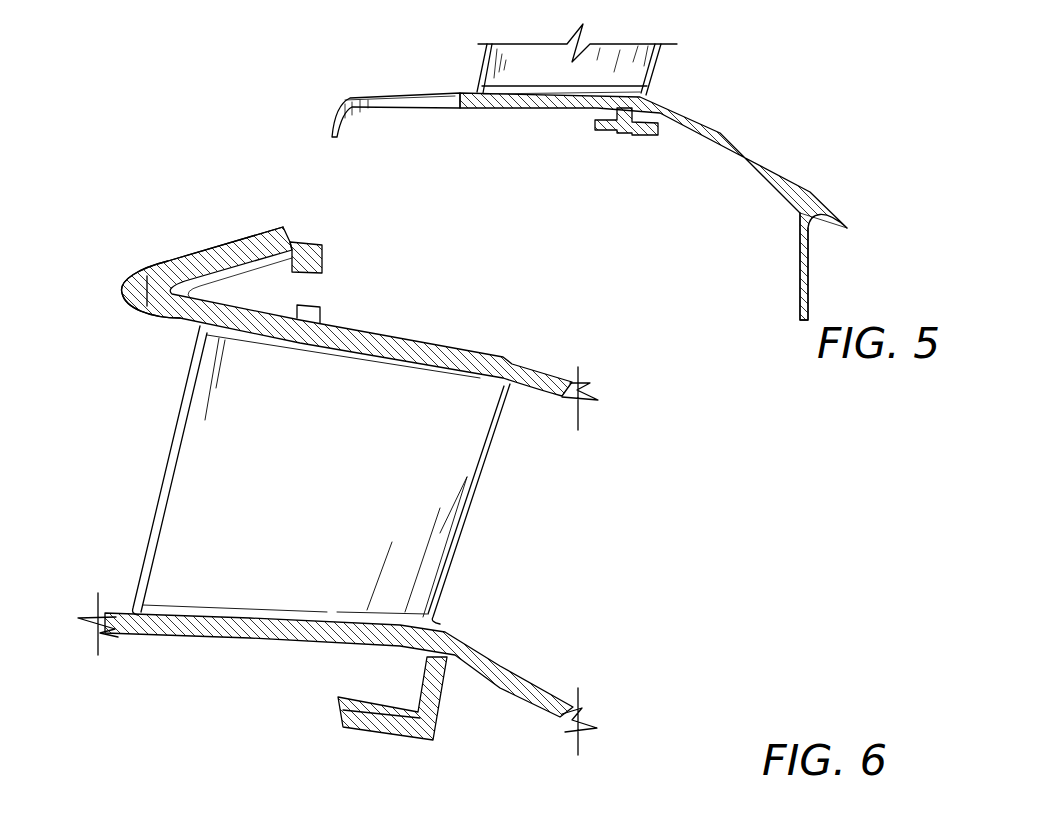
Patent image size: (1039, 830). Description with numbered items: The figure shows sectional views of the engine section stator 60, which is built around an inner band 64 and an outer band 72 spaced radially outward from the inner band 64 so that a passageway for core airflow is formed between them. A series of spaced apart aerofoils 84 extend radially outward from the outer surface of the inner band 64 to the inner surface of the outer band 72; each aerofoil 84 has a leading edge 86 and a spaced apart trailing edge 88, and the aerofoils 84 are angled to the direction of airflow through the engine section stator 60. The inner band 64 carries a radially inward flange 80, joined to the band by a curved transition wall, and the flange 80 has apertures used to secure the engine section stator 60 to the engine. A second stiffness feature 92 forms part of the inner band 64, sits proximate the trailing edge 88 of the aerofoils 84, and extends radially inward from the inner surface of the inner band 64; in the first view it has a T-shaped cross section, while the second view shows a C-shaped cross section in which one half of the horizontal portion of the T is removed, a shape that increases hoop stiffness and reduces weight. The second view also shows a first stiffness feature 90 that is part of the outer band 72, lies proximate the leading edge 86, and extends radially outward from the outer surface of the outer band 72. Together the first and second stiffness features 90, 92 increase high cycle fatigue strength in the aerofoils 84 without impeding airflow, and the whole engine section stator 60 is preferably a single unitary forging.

In FIG. 5, the engine section stator 60 is at (592, 165).
In FIG. 6, the engine section stator 60 is at (345, 485).
In FIG. 5, the inner band 64 is at (510, 110).
In FIG. 6, the inner band 64 is at (234, 634).
In FIG. 6, the outer band 72 is at (387, 343).
In FIG. 5, the radially inward flange 80 is at (800, 262).
In FIG. 5, the aerofoils 84 is at (633, 72).
In FIG. 6, the aerofoils 84 is at (447, 465).
In FIG. 5, the leading edge 86 is at (486, 74).
In FIG. 6, the leading edge 86 is at (167, 477).
In FIG. 5, the trailing edge 88 is at (655, 80).
In FIG. 6, the trailing edge 88 is at (462, 535).
In FIG. 6, the first stiffness feature 90 is at (166, 272).
In FIG. 5, the second stiffness feature 92 is at (622, 130).
In FIG. 6, the second stiffness feature 92 is at (380, 723).